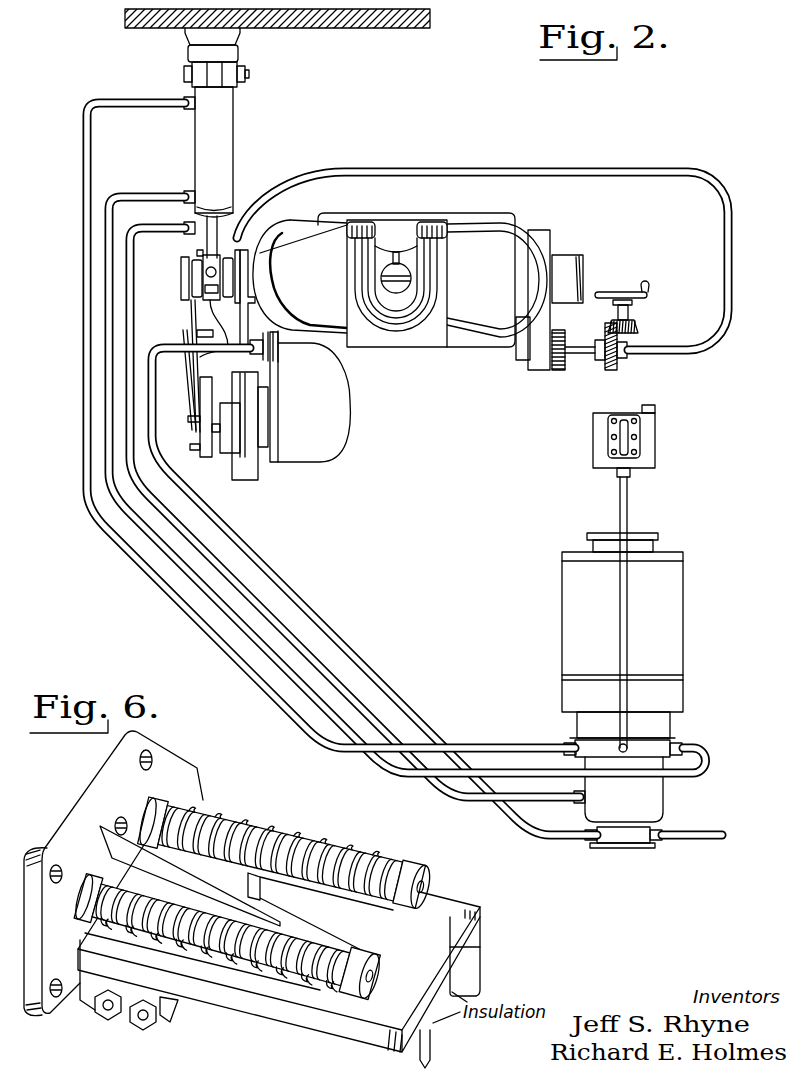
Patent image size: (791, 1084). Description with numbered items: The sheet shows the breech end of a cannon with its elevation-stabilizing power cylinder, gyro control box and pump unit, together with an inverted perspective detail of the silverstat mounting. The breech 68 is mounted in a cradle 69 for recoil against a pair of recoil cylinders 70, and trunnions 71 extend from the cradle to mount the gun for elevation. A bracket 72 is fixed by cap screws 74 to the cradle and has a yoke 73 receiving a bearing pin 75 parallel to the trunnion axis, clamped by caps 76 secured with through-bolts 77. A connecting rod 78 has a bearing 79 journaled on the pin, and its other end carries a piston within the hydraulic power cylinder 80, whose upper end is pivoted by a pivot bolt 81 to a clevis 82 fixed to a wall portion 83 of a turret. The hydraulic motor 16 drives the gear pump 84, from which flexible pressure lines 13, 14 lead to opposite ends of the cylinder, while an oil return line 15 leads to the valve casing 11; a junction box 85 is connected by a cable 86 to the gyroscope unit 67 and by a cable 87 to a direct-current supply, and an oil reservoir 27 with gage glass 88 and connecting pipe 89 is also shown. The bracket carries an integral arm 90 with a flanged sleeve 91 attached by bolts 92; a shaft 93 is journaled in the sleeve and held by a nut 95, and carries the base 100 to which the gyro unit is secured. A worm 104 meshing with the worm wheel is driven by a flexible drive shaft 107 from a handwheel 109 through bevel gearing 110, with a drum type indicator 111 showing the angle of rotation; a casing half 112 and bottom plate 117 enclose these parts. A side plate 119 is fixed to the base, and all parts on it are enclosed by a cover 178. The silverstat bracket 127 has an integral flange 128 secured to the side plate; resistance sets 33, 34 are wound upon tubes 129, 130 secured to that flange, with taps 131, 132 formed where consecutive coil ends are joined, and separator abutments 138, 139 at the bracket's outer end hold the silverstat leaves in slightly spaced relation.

In FIG. 2, the wall portion 83 is at (343, 29).
In FIG. 2, the clevis 82 is at (190, 52).
In FIG. 2, the pivot bolt 81 is at (245, 75).
In FIG. 2, the hydraulic power cylinder 80 is at (225, 128).
In FIG. 2, the connecting rod 78 is at (211, 237).
In FIG. 2, the flexible pressure line 14 is at (83, 158).
In FIG. 2, the flexible pressure line 13 is at (136, 196).
In FIG. 2, the oil return line 15 is at (140, 227).
In FIG. 2, the flexible drive shaft 107 is at (368, 169).
In FIG. 2, the cap screws 74 is at (240, 253).
In FIG. 2, the through-bolts 77 is at (198, 258).
In FIG. 2, the trunnions 71 is at (182, 269).
In FIG. 2, the bearing pin 75 is at (200, 288).
In FIG. 2, the bearing 79 is at (203, 293).
In FIG. 2, the yoke 73 is at (198, 316).
In FIG. 2, the bracket 72 is at (205, 334).
In FIG. 2, the caps 76 is at (232, 272).
In FIG. 2, the recoil cylinders 70 is at (287, 242).
In FIG. 2, the breech 68 is at (420, 338).
In FIG. 2, the cradle 69 is at (503, 338).
In FIG. 2, the handwheel 109 is at (650, 295).
In FIG. 2, the bevel gearing 110 is at (607, 328).
In FIG. 2, the drum type indicator 111 is at (557, 370).
In FIG. 2, the arm 90 is at (196, 378).
In FIG. 2, the shaft 93 is at (190, 418).
In FIG. 2, the nut 95 is at (212, 426).
In FIG. 2, the bolts 92 is at (191, 447).
In FIG. 2, the flanged sleeve 91 is at (207, 457).
In FIG. 2, the side plate 119 is at (278, 380).
In FIG. 2, the base 100 is at (268, 421).
In FIG. 2, the cover 178 is at (347, 417).
In FIG. 2, the gyroscope unit 67 is at (347, 462).
In FIG. 2, the bottom plate 117 is at (238, 481).
In FIG. 2, the casing half 112 is at (247, 462).
In FIG. 2, the worm 104 is at (218, 432).
In FIG. 2, the cable 86 is at (184, 472).
In FIG. 2, the gage glass 88 is at (610, 440).
In FIG. 2, the oil reservoir 27 is at (652, 443).
In FIG. 2, the connecting pipe 89 is at (627, 503).
In FIG. 2, the hydraulic motor 16 is at (683, 648).
In FIG. 2, the gear pump 84 is at (665, 747).
In FIG. 2, the valve casing 11 is at (656, 796).
In FIG. 2, the junction box 85 is at (634, 845).
In FIG. 2, the cable 87 is at (696, 840).
In FIG. 6, the flange 128 is at (73, 812).
In FIG. 6, the resistance set 33 is at (146, 881).
In FIG. 6, the resistance set 34 is at (280, 823).
In FIG. 6, the tap 131 is at (377, 857).
In FIG. 6, the tube 130 is at (430, 879).
In FIG. 6, the silverstat bracket 127 is at (482, 908).
In FIG. 6, the tube 129 is at (388, 973).
In FIG. 6, the separator abutment 138 is at (470, 971).
In FIG. 6, the tap 132 is at (330, 992).
In FIG. 6, the separator abutment 139 is at (432, 1040).